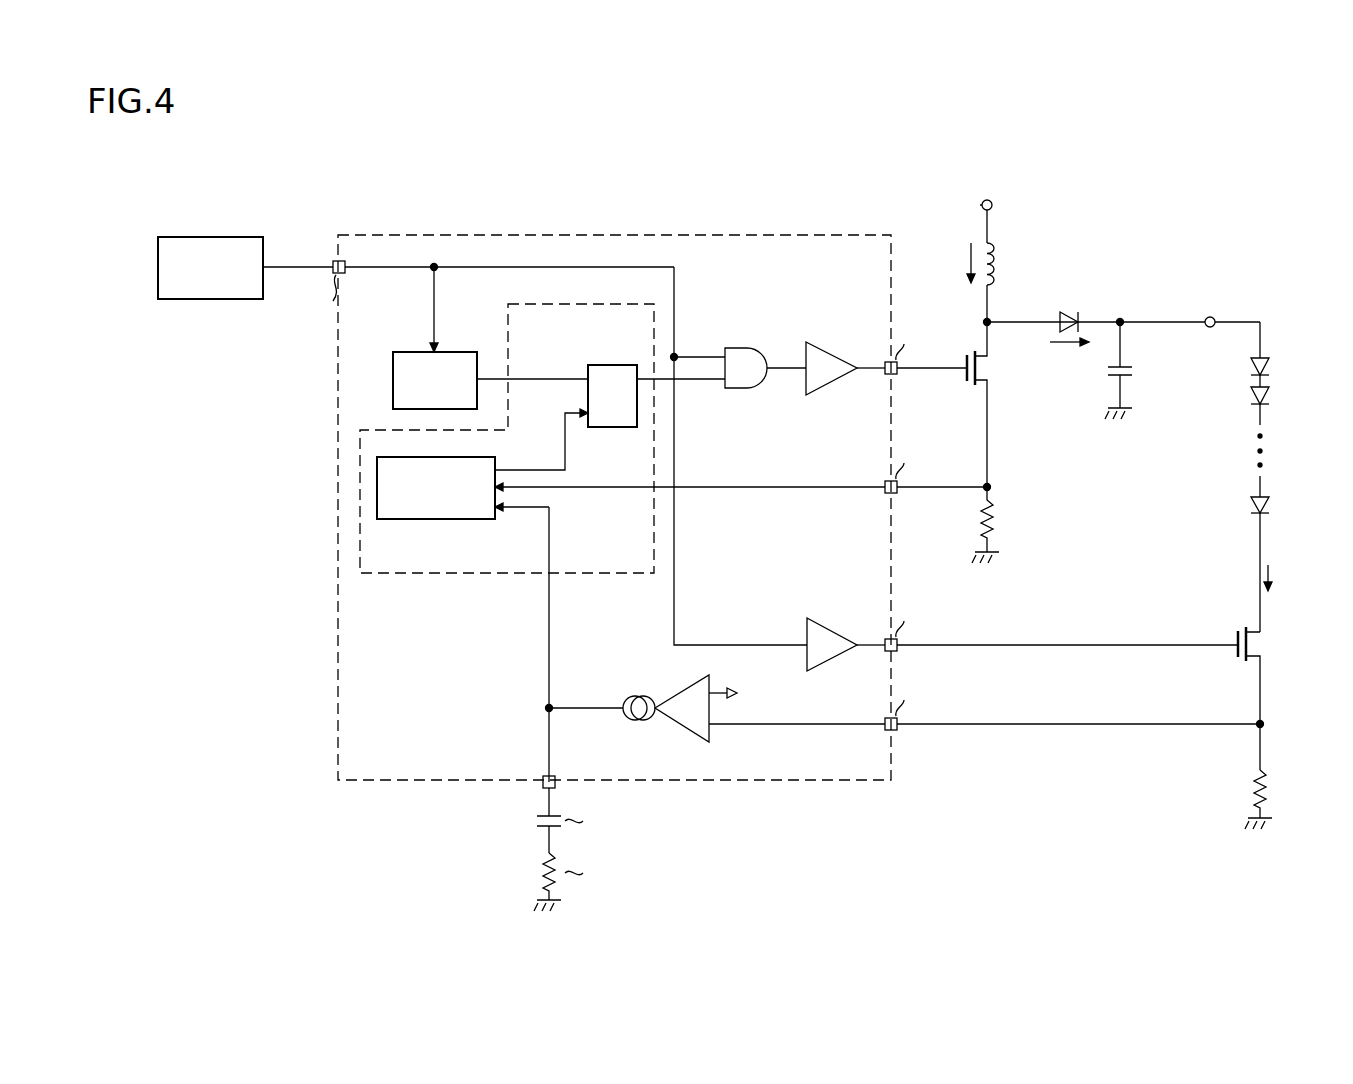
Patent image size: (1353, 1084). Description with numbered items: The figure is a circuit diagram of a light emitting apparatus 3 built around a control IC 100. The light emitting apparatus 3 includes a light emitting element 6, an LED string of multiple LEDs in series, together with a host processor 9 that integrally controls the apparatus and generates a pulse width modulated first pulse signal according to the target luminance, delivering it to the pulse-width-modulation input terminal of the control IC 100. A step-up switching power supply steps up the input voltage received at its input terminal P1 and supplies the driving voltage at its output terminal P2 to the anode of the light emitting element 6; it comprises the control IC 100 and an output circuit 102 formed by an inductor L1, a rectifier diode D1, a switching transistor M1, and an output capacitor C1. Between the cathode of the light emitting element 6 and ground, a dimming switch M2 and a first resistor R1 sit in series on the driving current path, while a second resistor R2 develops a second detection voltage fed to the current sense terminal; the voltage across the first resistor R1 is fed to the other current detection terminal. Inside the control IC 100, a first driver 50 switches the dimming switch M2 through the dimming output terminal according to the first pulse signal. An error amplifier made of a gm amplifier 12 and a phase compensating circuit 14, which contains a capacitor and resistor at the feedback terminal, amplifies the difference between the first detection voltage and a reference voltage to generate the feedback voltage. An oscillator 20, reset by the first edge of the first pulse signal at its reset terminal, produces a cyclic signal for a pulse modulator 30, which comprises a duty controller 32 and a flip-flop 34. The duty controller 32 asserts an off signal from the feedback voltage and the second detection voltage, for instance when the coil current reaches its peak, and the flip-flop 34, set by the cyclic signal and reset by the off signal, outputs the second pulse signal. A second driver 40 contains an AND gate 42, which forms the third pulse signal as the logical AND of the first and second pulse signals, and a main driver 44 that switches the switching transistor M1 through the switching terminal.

The light emitting apparatus 3 is at (1236, 176).
The light emitting element 6 is at (1280, 347).
The host processor 9 is at (207, 300).
The gm amplifier 12 is at (667, 722).
The phase compensating circuit 14 is at (627, 808).
The oscillator 20 is at (455, 352).
The pulse modulator 30 is at (480, 575).
The duty controller 32 is at (432, 521).
The flip-flop 34 is at (605, 363).
The second driver 40 is at (801, 379).
The AND gate 42 is at (737, 347).
The main driver 44 is at (845, 329).
The first driver 50 is at (847, 605).
The control IC 100 is at (745, 233).
The output circuit 102 is at (1162, 560).
The input terminal P1 is at (993, 205).
The output terminal P2 is at (1210, 328).
The inductor L1 is at (996, 265).
The rectifier diode D1 is at (1070, 305).
The output capacitor C1 is at (1134, 372).
The switching transistor M1 is at (990, 368).
The dimming switch M2 is at (1263, 645).
The first resistor R1 is at (1268, 793).
The second resistor R2 is at (994, 522).